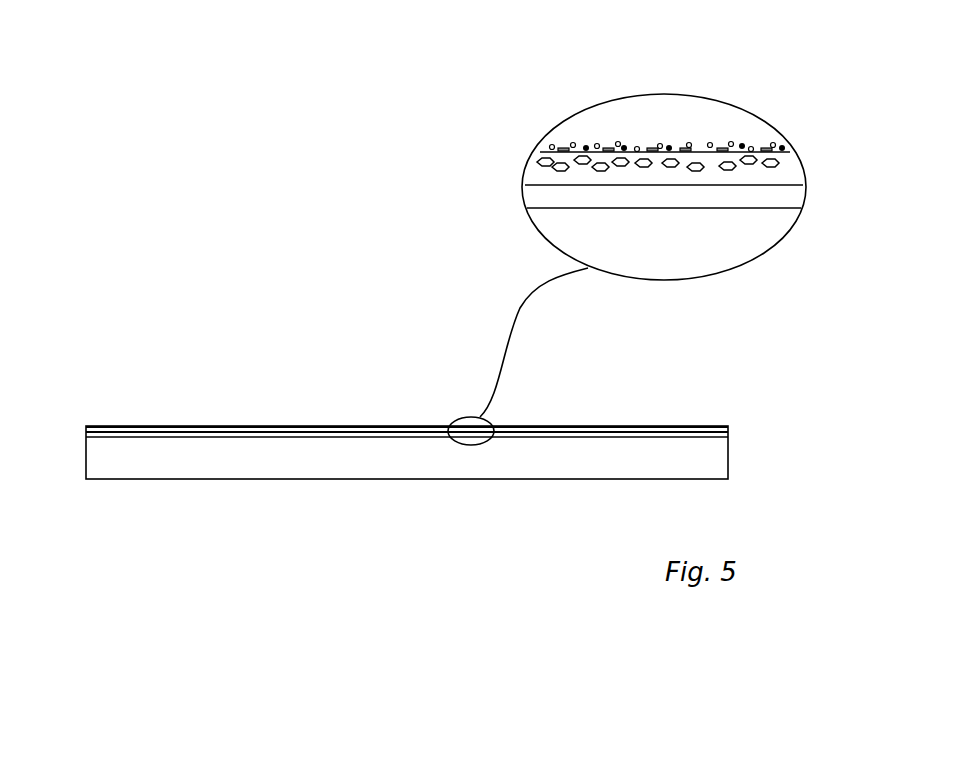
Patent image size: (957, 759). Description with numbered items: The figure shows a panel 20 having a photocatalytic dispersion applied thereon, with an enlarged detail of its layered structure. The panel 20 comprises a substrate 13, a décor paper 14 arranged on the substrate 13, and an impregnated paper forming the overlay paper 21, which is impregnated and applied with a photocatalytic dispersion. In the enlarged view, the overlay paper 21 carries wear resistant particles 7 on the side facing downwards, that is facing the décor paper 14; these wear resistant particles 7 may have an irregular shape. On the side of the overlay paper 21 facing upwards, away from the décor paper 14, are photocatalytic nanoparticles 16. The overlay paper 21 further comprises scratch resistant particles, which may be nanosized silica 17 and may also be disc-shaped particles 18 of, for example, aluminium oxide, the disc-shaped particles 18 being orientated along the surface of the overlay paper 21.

The panel 20 is at (172, 397).
The substrate 13 is at (310, 456).
The décor paper 14 is at (136, 438).
The overlay paper 21 is at (366, 425).
The wear resistant particles 7 is at (558, 168).
The photocatalytic nanoparticles 16 is at (573, 145).
The disc-shaped particles 18 is at (640, 148).
The nanosized silica 17 is at (742, 146).